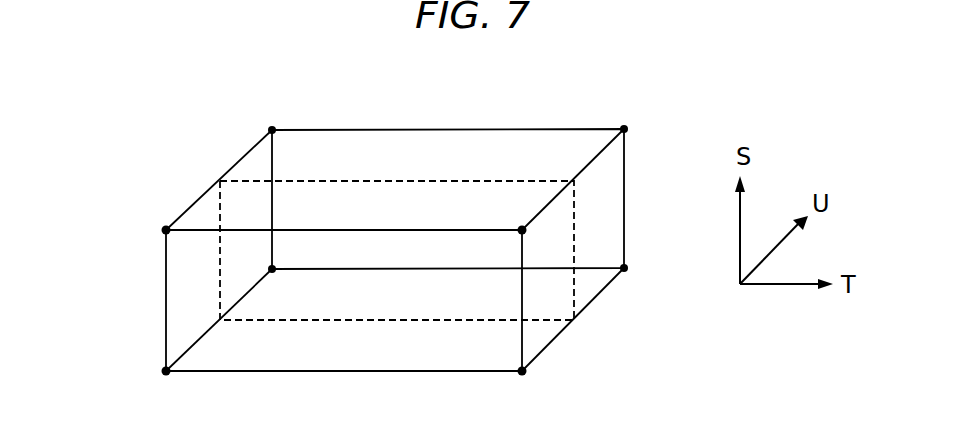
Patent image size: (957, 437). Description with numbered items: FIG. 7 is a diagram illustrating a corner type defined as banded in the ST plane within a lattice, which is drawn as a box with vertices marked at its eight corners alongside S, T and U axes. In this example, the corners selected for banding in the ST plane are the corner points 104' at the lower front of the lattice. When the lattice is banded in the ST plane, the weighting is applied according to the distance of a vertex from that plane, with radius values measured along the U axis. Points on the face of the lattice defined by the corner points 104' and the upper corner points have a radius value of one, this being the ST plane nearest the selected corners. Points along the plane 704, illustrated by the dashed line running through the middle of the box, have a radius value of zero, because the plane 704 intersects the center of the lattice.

The plane 704 is at (423, 178).
The corner points 104' is at (408, 383).